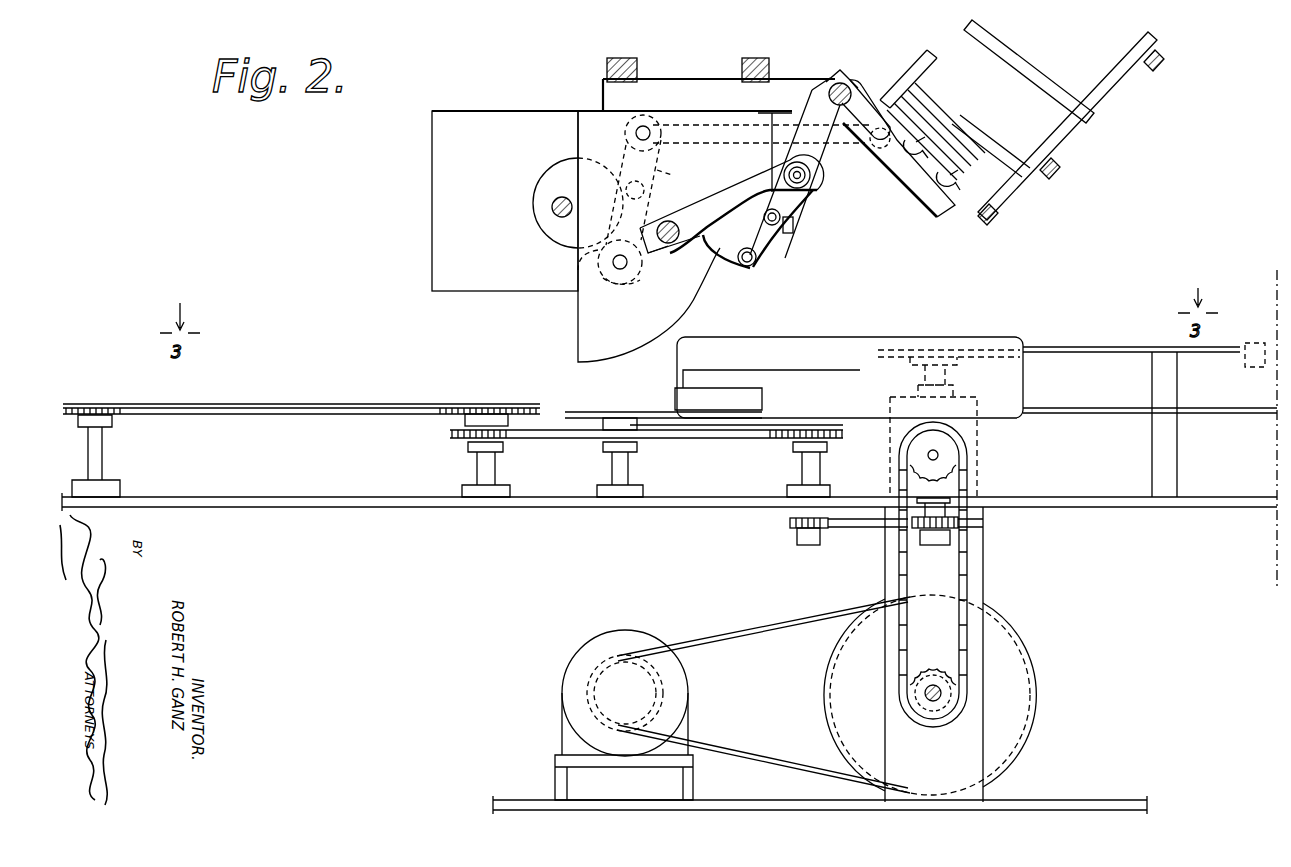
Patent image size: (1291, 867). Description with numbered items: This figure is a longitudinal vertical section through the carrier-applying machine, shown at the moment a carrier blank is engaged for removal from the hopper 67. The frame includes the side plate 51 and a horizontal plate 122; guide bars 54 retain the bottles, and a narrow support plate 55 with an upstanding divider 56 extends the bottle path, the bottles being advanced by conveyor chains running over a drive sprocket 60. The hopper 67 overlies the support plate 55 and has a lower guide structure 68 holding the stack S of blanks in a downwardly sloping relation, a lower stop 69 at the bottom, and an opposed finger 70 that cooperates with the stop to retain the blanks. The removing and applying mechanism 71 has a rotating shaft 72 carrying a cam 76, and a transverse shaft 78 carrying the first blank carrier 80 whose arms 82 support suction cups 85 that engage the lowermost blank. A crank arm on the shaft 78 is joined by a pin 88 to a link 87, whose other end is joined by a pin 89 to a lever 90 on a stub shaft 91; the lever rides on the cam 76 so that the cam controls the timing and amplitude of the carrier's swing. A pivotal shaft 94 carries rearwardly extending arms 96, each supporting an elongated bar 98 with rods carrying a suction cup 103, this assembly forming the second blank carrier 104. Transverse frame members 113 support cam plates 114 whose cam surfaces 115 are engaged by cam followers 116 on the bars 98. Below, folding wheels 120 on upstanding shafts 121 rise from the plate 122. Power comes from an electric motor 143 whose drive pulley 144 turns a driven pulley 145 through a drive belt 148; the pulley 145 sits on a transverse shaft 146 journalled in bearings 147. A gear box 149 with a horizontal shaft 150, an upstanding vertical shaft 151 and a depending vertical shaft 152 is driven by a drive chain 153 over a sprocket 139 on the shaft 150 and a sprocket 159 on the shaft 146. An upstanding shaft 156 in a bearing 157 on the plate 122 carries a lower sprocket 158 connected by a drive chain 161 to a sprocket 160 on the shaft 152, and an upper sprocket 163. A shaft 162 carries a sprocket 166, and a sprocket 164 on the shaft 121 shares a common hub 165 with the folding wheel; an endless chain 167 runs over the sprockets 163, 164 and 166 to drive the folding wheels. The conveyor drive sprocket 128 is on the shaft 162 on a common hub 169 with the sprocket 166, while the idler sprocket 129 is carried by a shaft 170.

The side plate 51 is at (432, 181).
The guide bars 54 is at (812, 384).
The support plate 55 is at (702, 405).
The divider 56 is at (768, 346).
The drive sprocket 60 is at (930, 348).
The hopper 67 is at (1110, 126).
The lower guide structure 68 is at (1135, 68).
The lower stop 69 is at (986, 222).
The finger 70 is at (887, 90).
The blank removing and applying mechanism 71 is at (582, 103).
The rotating shaft 72 is at (552, 207).
The cam 76 is at (560, 168).
The transverse shaft 78 is at (842, 83).
The first blank carrier 80 is at (897, 192).
The arms 82 is at (940, 220).
The suction cups 85 is at (916, 138).
The link 87 is at (870, 148).
The pin 88 is at (865, 140).
The pin 89 is at (618, 143).
The lever 90 is at (658, 173).
The stub shaft 91 is at (609, 297).
The shaft 94 is at (670, 245).
The arms 96 is at (740, 190).
The elongated bar 98 is at (812, 112).
The suction cup 103 is at (796, 225).
The second blank carrier 104 is at (757, 276).
The transverse frame members 113 is at (630, 58).
The cam plates 114 is at (578, 130).
The cam surfaces 115 is at (690, 295).
The cam followers 116 is at (760, 262).
The folding wheels 120 is at (575, 420).
The upstanding shafts 121 is at (612, 462).
The horizontal plate 122 is at (680, 507).
The drive sprocket 128 is at (444, 404).
The idler sprocket 129 is at (125, 386).
The sprocket 139 is at (912, 463).
The electric motor 143 is at (685, 700).
The drive pulley 144 is at (660, 682).
The driven pulley 145 is at (1028, 658).
The transverse shaft 146 is at (936, 702).
The bearings 147 is at (926, 716).
The drive belt 148 is at (808, 616).
The gear box 149 is at (897, 447).
The horizontal shaft 150 is at (940, 455).
The upstanding vertical shaft 151 is at (948, 378).
The depending vertical shaft 152 is at (935, 546).
The drive chain 153 is at (983, 562).
The upstanding shaft 156 is at (810, 470).
The bearing 157 is at (792, 490).
The sprocket 158 is at (790, 523).
The sprocket 159 is at (936, 668).
The sprocket 160 is at (960, 524).
The drive chain 161 is at (850, 532).
The shaft 162 is at (478, 463).
The sprocket 163 is at (820, 414).
The sprocket 164 is at (648, 440).
The hub 165 is at (636, 428).
The sprocket 166 is at (455, 436).
The endless chain 167 is at (710, 438).
The hub 169 is at (490, 418).
The shaft 170 is at (102, 470).
The stack S is at (1020, 58).